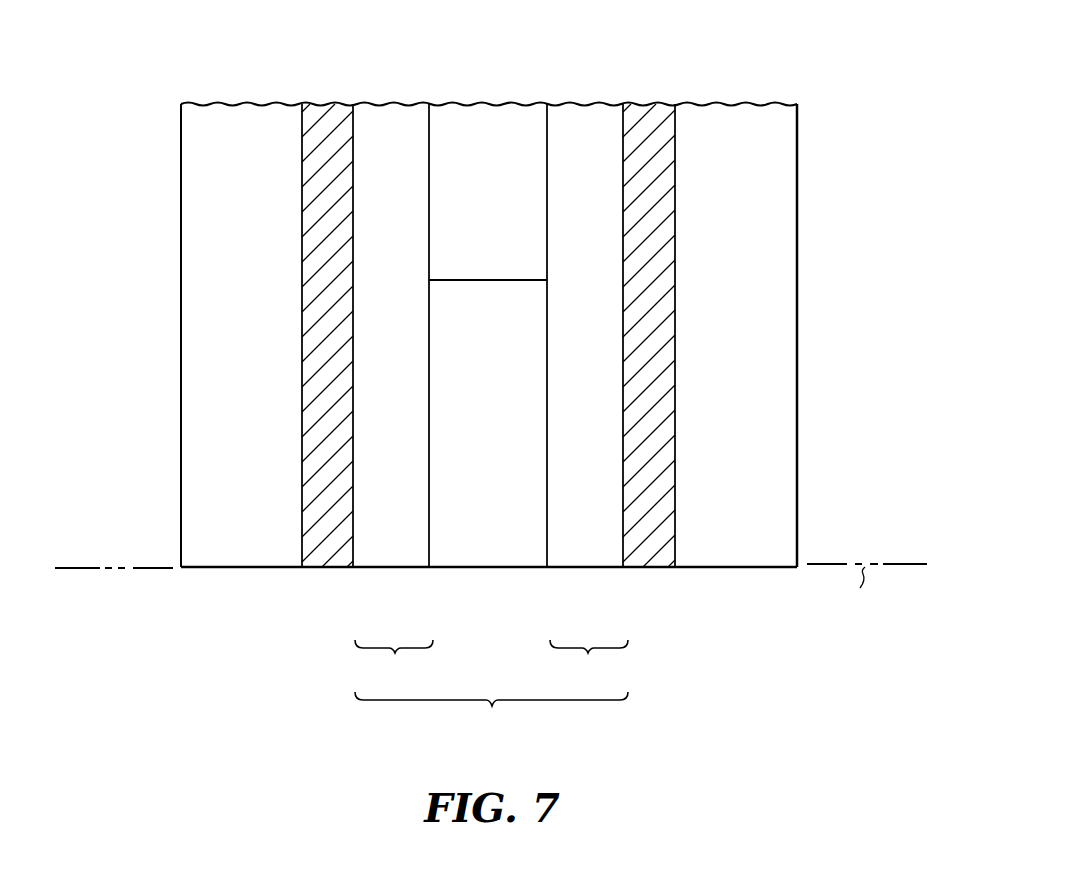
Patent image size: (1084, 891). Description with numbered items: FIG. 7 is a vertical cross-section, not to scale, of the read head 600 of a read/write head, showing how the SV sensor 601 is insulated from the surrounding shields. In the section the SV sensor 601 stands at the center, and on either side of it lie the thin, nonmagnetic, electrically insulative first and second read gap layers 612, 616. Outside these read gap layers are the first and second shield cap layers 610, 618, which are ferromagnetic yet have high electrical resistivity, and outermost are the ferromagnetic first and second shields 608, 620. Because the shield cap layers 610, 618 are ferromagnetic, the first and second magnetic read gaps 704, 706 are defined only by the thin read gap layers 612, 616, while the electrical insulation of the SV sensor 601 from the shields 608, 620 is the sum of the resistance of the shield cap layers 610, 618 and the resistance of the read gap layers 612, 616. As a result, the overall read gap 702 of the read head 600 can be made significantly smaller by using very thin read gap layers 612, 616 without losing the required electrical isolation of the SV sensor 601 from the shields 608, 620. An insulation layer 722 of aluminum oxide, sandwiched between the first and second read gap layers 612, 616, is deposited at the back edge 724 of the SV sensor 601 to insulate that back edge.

The read head 600 is at (745, 698).
The SV sensor 601 is at (476, 495).
The first shield 608 is at (236, 497).
The first shield cap layer 610 is at (338, 568).
The first read gap layer 612 is at (399, 568).
The second read gap layer 616 is at (587, 568).
The second shield cap layer 618 is at (655, 568).
The second shield 620 is at (713, 495).
The read gap 702 is at (491, 715).
The first magnetic read gap 704 is at (394, 663).
The second magnetic read gap 706 is at (589, 663).
The insulation layer 722 is at (483, 108).
The back edge 724 is at (488, 279).